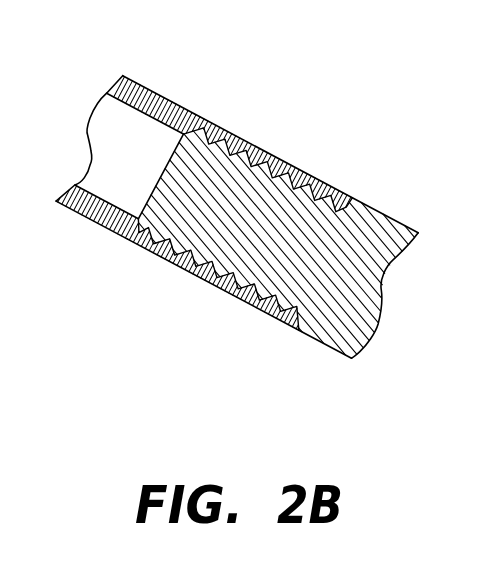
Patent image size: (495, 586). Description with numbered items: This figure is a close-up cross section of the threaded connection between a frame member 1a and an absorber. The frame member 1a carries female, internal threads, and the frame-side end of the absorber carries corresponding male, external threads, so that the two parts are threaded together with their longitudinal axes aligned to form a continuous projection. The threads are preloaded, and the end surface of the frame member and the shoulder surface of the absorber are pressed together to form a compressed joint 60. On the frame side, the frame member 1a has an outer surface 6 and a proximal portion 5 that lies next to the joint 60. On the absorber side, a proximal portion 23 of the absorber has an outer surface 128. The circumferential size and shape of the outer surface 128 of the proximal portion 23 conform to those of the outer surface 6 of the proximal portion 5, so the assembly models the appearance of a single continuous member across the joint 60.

The frame member 1a is at (160, 108).
The outer surface 6 is at (112, 232).
The compressed joint 60 is at (343, 217).
The proximal portion 5 is at (262, 313).
The proximal portion 23 is at (370, 288).
The outer surface 128 is at (329, 347).